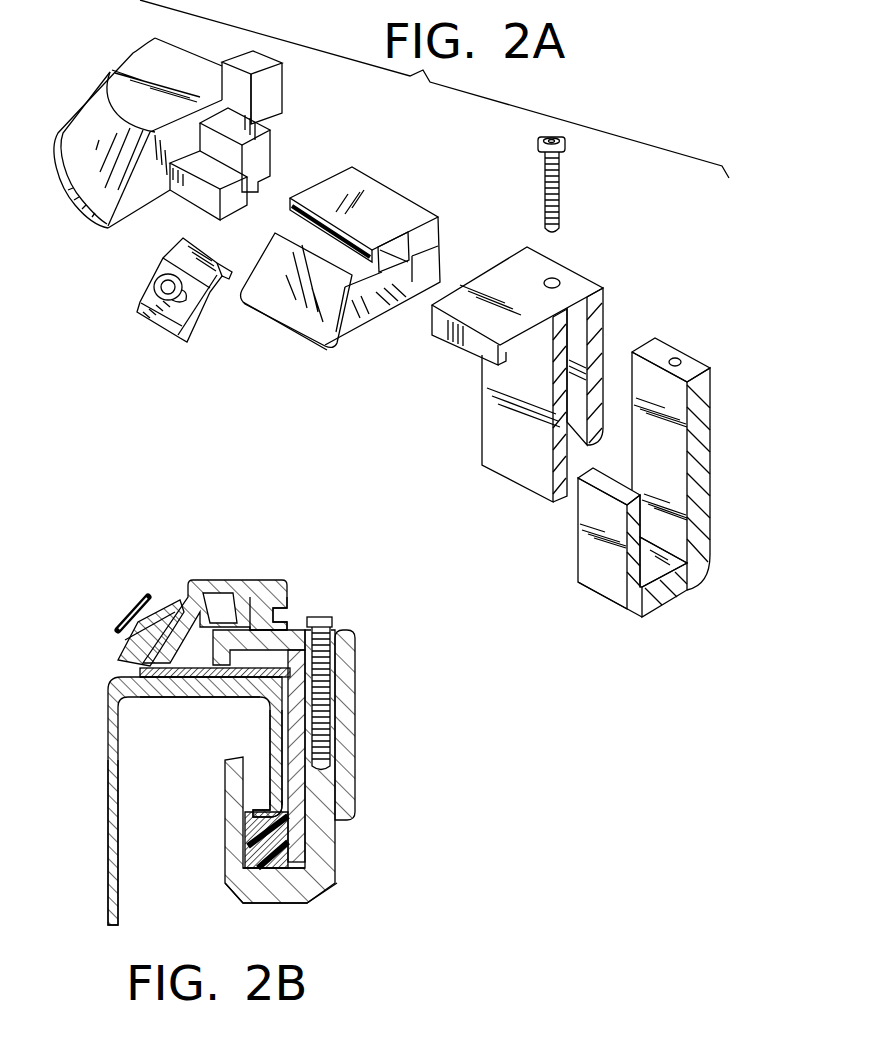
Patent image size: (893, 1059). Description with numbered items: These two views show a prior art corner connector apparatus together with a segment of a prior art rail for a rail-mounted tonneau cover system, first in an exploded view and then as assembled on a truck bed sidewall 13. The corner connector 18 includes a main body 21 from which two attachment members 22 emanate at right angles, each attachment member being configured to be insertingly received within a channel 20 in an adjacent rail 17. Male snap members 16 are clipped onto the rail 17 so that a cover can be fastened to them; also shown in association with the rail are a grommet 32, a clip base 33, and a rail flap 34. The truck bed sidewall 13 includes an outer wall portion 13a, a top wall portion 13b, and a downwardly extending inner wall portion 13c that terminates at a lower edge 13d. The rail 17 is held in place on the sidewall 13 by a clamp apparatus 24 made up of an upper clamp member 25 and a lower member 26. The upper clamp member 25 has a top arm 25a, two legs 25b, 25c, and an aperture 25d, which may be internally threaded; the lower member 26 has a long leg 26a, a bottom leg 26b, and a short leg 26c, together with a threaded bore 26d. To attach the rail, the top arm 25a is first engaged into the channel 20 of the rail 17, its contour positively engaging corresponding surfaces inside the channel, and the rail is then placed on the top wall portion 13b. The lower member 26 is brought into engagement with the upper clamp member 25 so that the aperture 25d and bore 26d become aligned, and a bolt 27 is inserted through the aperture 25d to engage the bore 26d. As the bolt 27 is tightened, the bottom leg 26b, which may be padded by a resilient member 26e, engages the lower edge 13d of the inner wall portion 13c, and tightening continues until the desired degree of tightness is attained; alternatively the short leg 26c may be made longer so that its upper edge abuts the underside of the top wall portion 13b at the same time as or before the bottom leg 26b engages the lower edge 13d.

In FIG. 2B, the truck bed sidewall 13 is at (100, 722).
In FIG. 2B, the outer wall portion 13a is at (108, 775).
In FIG. 2B, the top wall portion 13b is at (167, 684).
In FIG. 2B, the inner wall portion 13c is at (274, 740).
In FIG. 2B, the lower edge 13d is at (258, 808).
In FIG. 2A, the male snap members 16 is at (205, 320).
In FIG. 2B, the male snap members 16 is at (110, 636).
In FIG. 2A, the rail 17 is at (373, 338).
In FIG. 2B, the rail 17 is at (220, 572).
In FIG. 2A, the corner connector 18 is at (56, 200).
In FIG. 2A, the channel 20 is at (438, 251).
In FIG. 2B, the channel 20 is at (263, 605).
In FIG. 2A, the main body 21 is at (143, 58).
In FIG. 2A, the attachment members 22 is at (273, 91).
In FIG. 2A, the clamp apparatus 24 is at (646, 262).
In FIG. 2B, the clamp apparatus 24 is at (375, 680).
In FIG. 2A, the upper clamp member 25 is at (431, 338).
In FIG. 2B, the upper clamp member 25 is at (356, 715).
In FIG. 2A, the top arm 25a is at (500, 333).
In FIG. 2A, the leg 25b is at (562, 415).
In FIG. 2B, the leg 25b is at (290, 700).
In FIG. 2A, the leg 25c is at (598, 342).
In FIG. 2B, the leg 25c is at (345, 650).
In FIG. 2A, the aperture 25d is at (560, 283).
In FIG. 2A, the lower member 26 is at (726, 407).
In FIG. 2B, the lower member 26 is at (340, 846).
In FIG. 2A, the long leg 26a is at (703, 490).
In FIG. 2B, the long leg 26a is at (262, 637).
In FIG. 2A, the bottom leg 26b is at (668, 590).
In FIG. 2B, the bottom leg 26b is at (258, 890).
In FIG. 2A, the short leg 26c is at (630, 555).
In FIG. 2A, the bore 26d is at (682, 358).
In FIG. 2B, the resilient member 26e is at (243, 855).
In FIG. 2A, the bolt 27 is at (538, 150).
In FIG. 2B, the bolt 27 is at (331, 619).
In FIG. 2A, the grommet 32 is at (160, 288).
In FIG. 2A, the clip base 33 is at (177, 325).
In FIG. 2A, the rail flap 34 is at (273, 297).